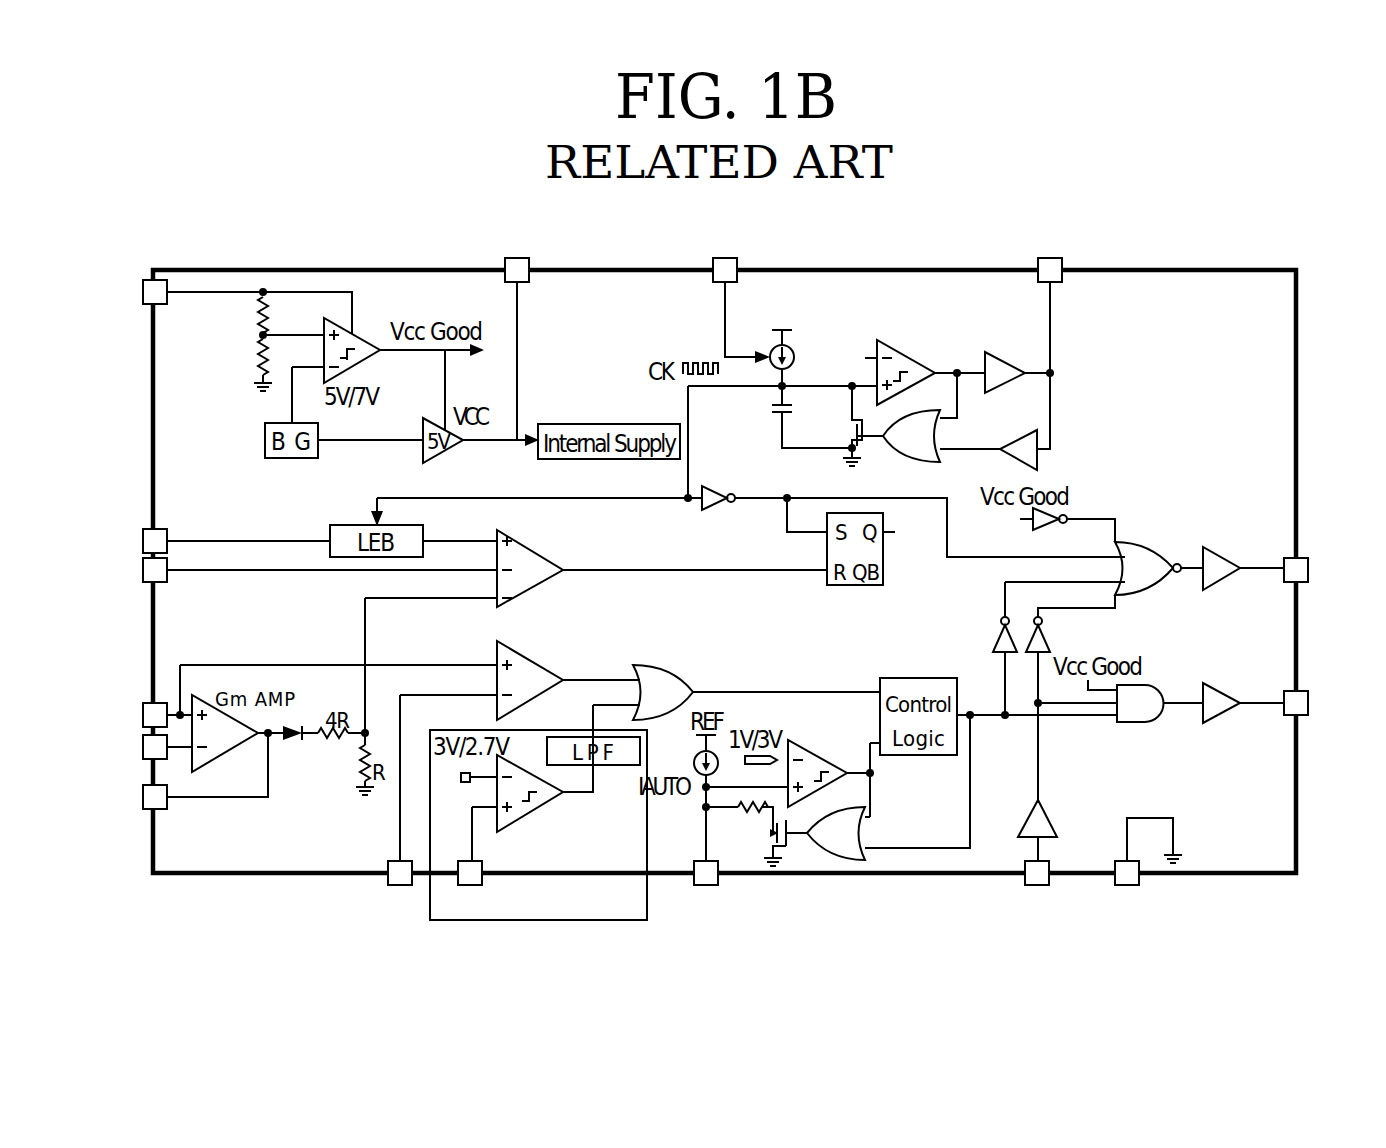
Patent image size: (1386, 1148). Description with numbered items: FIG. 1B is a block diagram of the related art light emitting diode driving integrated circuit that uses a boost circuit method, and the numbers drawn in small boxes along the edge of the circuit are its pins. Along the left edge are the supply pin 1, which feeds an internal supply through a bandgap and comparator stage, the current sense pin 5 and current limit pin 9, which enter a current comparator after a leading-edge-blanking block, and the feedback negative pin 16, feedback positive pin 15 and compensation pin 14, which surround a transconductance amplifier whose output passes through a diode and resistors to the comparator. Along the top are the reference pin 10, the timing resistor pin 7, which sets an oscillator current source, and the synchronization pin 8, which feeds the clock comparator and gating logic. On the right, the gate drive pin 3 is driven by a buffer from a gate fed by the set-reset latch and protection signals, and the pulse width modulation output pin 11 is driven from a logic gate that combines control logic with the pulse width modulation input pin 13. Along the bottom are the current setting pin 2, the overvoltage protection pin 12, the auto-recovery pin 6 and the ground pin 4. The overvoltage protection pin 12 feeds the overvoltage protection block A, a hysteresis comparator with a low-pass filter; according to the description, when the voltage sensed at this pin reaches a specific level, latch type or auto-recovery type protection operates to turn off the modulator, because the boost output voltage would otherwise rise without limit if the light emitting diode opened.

The VCC pin 1 is at (136, 281).
The ISET pin 2 is at (400, 887).
The GATE pin 3 is at (1324, 571).
The GND pin 4 is at (1127, 887).
The CS pin 5 is at (144, 529).
The AUTO pin 6 is at (706, 887).
The RT pin 7 is at (726, 258).
The SYNC pin 8 is at (1052, 258).
The CLIM pin 9 is at (133, 584).
The REF pin 10 is at (517, 258).
The PWMO pin 11 is at (1331, 704).
The OVP pin 12 is at (470, 887).
The PWMI pin 13 is at (1037, 887).
The COMP pin 14 is at (124, 798).
The FBP pin 15 is at (134, 748).
The FBN pin 16 is at (134, 716).
The over-voltage protection block A is at (530, 920).